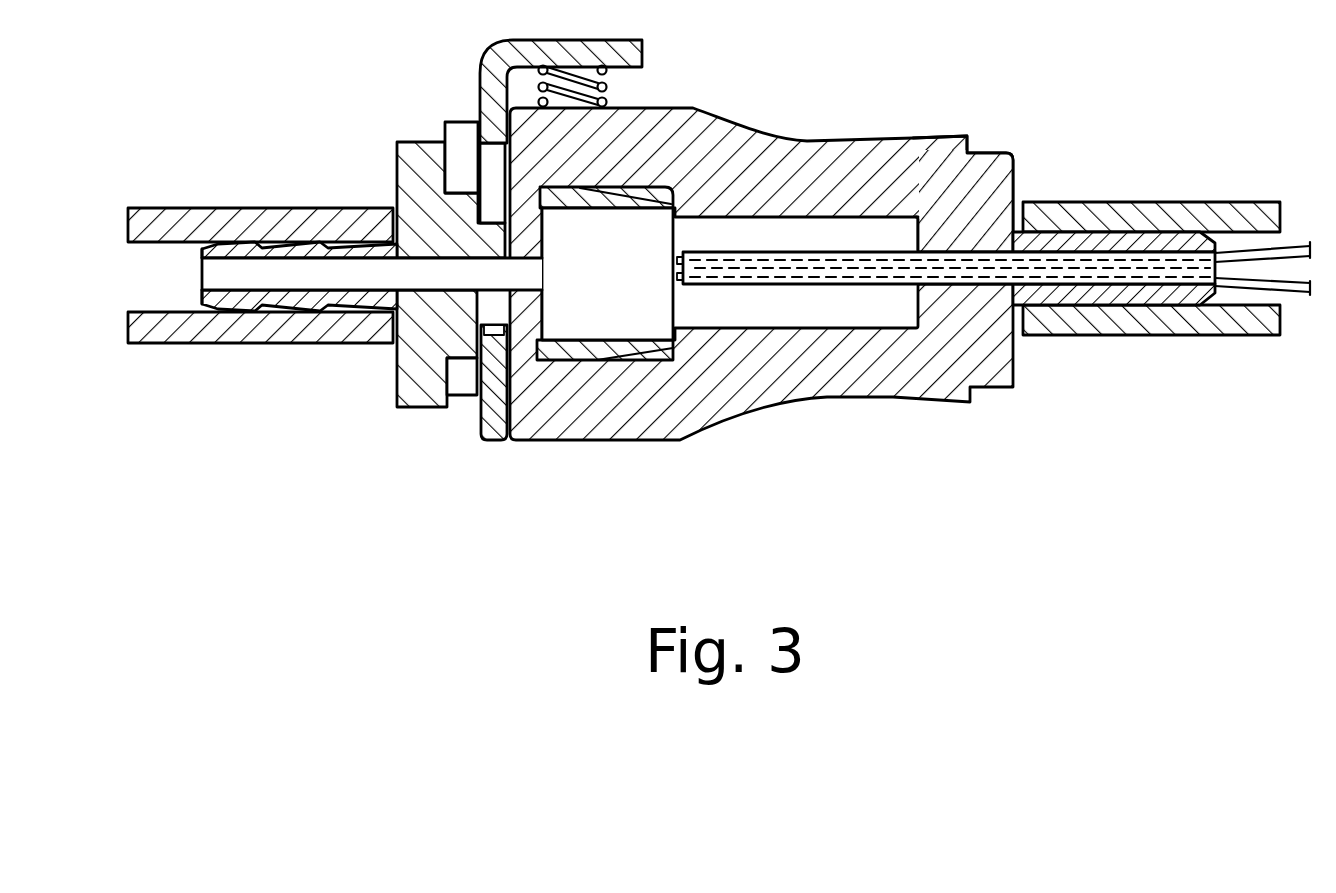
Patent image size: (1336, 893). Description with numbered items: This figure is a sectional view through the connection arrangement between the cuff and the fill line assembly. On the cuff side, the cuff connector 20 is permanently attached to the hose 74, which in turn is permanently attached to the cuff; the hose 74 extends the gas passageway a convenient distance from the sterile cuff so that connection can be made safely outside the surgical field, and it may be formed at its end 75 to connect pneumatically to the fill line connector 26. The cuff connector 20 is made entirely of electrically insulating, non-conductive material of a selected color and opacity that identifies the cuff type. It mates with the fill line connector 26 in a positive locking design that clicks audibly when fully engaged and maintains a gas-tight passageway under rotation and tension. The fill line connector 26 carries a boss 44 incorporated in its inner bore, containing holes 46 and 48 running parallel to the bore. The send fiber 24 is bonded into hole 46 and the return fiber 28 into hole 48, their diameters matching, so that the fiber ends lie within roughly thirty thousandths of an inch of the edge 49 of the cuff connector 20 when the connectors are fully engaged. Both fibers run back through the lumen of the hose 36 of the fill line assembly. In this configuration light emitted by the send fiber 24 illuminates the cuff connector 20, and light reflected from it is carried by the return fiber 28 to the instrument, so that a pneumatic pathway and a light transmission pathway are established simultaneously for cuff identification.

The cuff connector 20 is at (397, 387).
The send fiber 24 is at (1305, 248).
The fill line connector 26 is at (767, 130).
The return fiber 28 is at (1304, 283).
The hose 36 is at (1050, 202).
The boss 44 is at (827, 252).
The hole 46 is at (1214, 250).
The hole 48 is at (1216, 284).
The edge 49 is at (674, 305).
The hose 74 is at (147, 210).
The end 75 is at (380, 207).